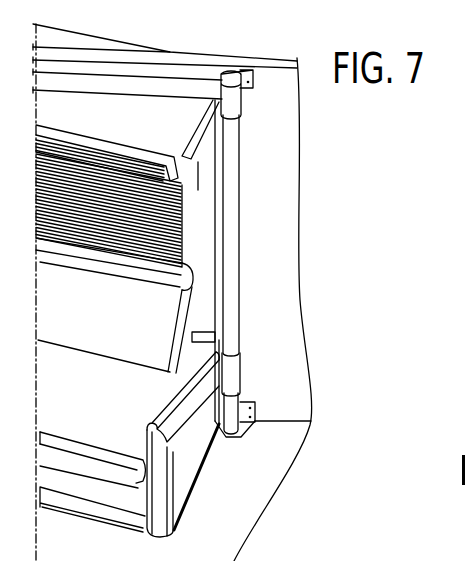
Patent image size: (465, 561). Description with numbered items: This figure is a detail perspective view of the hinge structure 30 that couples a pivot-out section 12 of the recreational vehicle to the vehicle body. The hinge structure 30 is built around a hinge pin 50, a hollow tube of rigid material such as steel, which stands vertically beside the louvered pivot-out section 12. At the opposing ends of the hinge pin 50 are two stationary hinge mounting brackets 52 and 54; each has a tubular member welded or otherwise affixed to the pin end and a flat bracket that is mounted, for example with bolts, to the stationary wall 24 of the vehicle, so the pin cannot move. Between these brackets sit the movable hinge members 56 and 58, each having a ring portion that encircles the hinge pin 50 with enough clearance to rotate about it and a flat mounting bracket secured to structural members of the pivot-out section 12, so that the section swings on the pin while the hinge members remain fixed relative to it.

The pivot-out section 12 is at (211, 232).
The stationary wall 24 is at (283, 189).
The hinge structure 30 is at (284, 253).
The hinge pin 50 is at (236, 267).
The stationary hinge mounting bracket 52 is at (256, 84).
The stationary hinge mounting bracket 54 is at (256, 410).
The movable hinge member 56 is at (233, 132).
The movable hinge member 58 is at (241, 366).